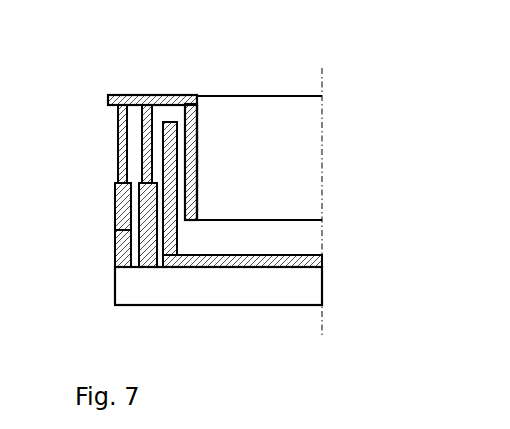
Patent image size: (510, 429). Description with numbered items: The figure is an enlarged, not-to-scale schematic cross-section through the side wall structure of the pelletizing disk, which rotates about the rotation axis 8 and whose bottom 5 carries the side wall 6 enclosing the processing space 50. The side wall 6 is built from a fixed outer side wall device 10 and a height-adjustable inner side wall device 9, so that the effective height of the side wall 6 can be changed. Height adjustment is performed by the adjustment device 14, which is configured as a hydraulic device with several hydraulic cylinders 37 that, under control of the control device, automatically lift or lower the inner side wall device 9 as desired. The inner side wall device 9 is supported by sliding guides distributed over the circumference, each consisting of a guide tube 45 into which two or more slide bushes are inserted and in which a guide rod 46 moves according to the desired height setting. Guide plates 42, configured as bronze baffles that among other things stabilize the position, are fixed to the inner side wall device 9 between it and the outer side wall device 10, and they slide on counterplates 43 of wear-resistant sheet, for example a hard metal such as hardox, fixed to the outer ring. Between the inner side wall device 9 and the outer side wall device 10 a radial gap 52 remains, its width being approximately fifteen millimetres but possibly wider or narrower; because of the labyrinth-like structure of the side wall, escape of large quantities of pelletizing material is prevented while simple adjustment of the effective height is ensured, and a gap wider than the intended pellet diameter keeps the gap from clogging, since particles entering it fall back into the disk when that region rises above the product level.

The bottom 5 is at (300, 254).
The side wall 6 is at (192, 283).
The rotation axis 8 is at (324, 162).
The inner side wall device 9 is at (198, 143).
The outer side wall device 10 is at (160, 104).
The adjustment device 14 is at (143, 162).
The hydraulic cylinder 37 is at (122, 206).
The guide plate 42 is at (198, 198).
The counterplate 43 is at (171, 123).
The guide tube 45 is at (118, 250).
The guide rod 46 is at (120, 130).
The processing space 50 is at (278, 120).
The radial gap 52 is at (185, 225).